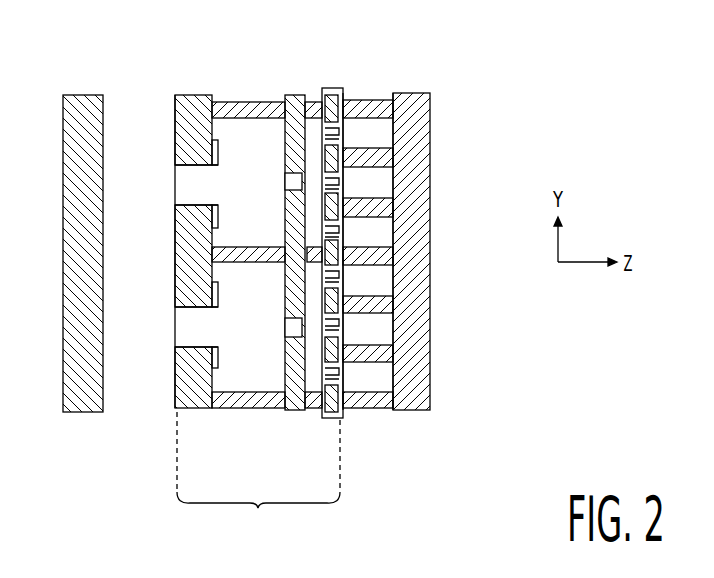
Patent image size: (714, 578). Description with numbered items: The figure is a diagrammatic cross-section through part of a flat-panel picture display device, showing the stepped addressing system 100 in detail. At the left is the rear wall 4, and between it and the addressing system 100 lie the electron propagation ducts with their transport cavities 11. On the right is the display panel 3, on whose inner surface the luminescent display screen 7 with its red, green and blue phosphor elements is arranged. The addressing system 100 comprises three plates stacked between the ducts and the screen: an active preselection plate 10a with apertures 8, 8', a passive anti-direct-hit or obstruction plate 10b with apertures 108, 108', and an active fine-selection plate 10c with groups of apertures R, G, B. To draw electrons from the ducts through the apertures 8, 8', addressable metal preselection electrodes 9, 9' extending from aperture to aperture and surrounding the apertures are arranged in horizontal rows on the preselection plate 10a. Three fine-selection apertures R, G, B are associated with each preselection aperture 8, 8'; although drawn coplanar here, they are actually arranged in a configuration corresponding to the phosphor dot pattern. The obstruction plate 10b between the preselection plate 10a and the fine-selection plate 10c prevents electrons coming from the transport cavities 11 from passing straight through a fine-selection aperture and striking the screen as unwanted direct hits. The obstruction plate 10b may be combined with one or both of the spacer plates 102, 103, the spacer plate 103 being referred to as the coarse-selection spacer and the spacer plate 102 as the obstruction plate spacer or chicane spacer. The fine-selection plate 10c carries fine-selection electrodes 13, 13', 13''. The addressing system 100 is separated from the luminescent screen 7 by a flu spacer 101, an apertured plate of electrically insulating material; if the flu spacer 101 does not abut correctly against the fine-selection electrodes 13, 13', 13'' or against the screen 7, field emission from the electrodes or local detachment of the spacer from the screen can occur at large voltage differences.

The display panel 3 is at (424, 113).
The rear wall 4 is at (70, 213).
The display screen 7 is at (390, 130).
The preselection aperture 8 is at (204, 126).
The preselection aperture 8' is at (170, 386).
The preselection electrode 9 is at (231, 184).
The preselection electrode 9' is at (234, 321).
The transport cavity 11 is at (135, 105).
The fine-selection electrode 13 is at (368, 91).
The fine-selection electrode 13' is at (411, 160).
The fine-selection electrode 13'' is at (410, 260).
The red fine-selection aperture R is at (350, 105).
The green fine-selection aperture G is at (343, 176).
The blue fine-selection aperture B is at (343, 228).
The preselection plate 10a is at (190, 410).
The obstruction plate 10b is at (297, 410).
The fine-selection plate 10c is at (334, 418).
The addressing system 100 is at (258, 475).
The flu spacer 101 is at (372, 410).
The spacer plate 102 is at (314, 102).
The spacer plate 103 is at (257, 102).
The obstruction plate aperture 108 is at (274, 162).
The obstruction plate aperture 108' is at (270, 341).